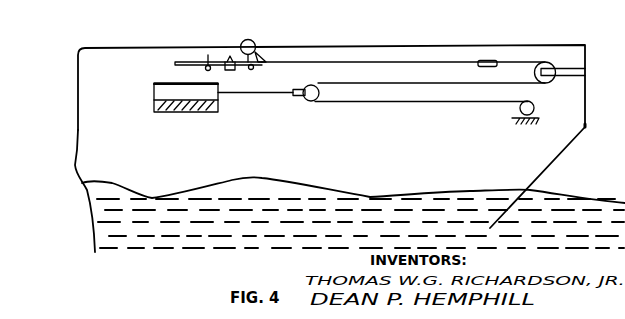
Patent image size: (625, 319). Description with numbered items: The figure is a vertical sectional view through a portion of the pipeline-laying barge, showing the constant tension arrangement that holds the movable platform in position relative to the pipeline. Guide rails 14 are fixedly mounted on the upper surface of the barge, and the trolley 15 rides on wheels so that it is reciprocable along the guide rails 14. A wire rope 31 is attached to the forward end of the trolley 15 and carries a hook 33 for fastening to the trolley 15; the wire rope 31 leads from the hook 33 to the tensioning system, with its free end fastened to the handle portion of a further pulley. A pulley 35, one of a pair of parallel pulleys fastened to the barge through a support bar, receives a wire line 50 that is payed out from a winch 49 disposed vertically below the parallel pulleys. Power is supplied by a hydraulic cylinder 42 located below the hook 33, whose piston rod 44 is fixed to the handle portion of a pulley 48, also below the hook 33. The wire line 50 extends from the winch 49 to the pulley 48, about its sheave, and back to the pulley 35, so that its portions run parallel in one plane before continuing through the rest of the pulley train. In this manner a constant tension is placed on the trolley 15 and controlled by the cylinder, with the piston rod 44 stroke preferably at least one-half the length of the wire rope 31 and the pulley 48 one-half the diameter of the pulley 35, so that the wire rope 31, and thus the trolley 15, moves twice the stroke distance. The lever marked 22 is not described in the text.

The guide rails 14 is at (246, 70).
The trolley 15 is at (188, 62).
The lever 22 is at (255, 41).
The wire rope 31 is at (399, 44).
The hook 33 is at (262, 52).
The pulley 35 is at (546, 62).
The hydraulic cylinder 42 is at (154, 90).
The piston rod 44 is at (244, 94).
The pulley 48 is at (320, 86).
The winch 49 is at (512, 116).
The wire line 50 is at (394, 104).